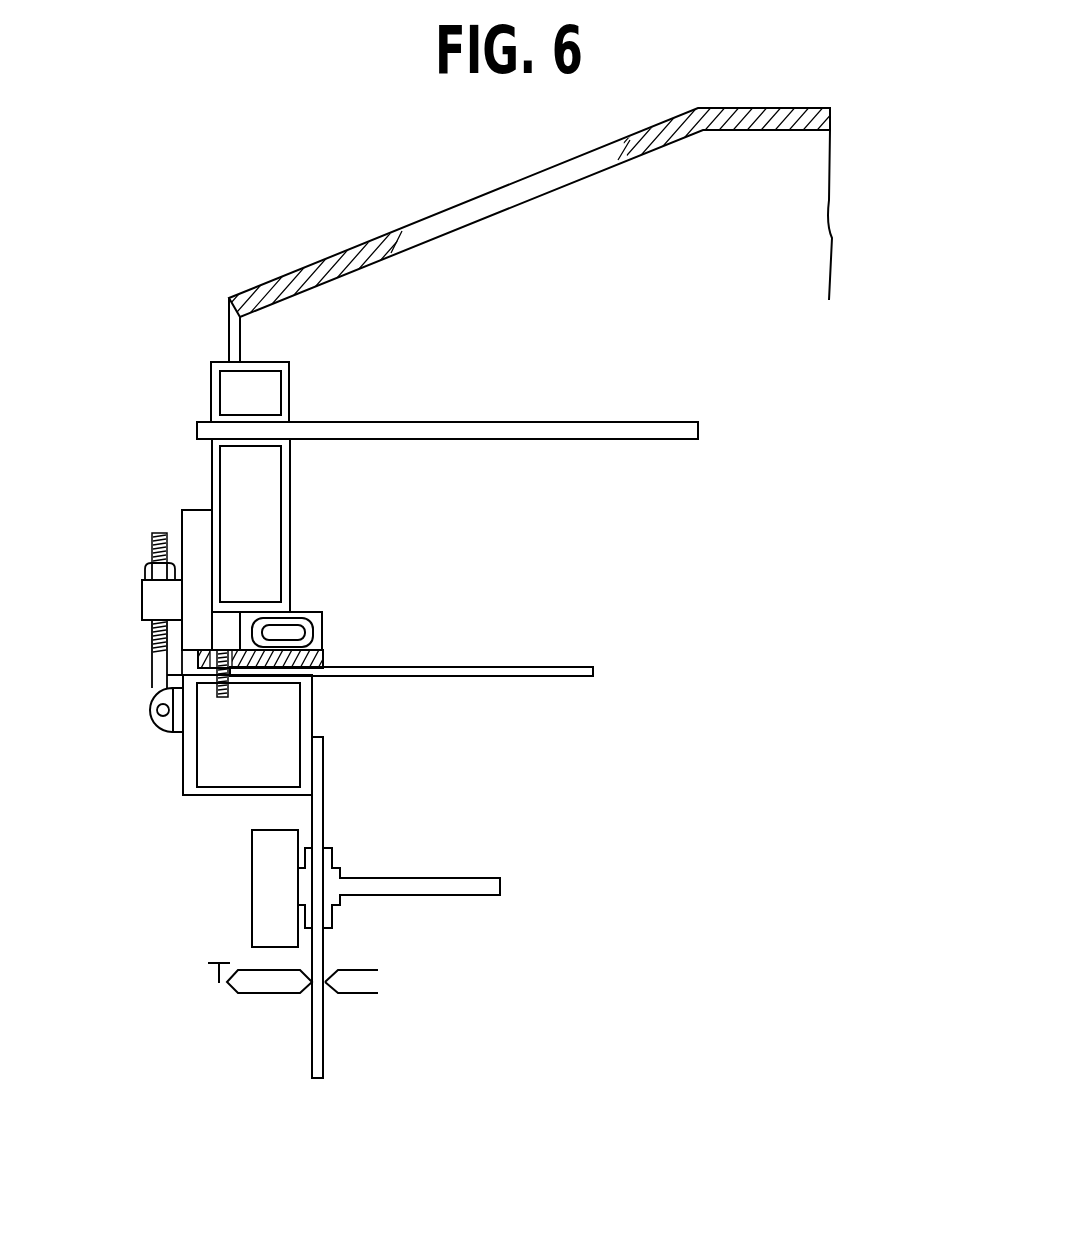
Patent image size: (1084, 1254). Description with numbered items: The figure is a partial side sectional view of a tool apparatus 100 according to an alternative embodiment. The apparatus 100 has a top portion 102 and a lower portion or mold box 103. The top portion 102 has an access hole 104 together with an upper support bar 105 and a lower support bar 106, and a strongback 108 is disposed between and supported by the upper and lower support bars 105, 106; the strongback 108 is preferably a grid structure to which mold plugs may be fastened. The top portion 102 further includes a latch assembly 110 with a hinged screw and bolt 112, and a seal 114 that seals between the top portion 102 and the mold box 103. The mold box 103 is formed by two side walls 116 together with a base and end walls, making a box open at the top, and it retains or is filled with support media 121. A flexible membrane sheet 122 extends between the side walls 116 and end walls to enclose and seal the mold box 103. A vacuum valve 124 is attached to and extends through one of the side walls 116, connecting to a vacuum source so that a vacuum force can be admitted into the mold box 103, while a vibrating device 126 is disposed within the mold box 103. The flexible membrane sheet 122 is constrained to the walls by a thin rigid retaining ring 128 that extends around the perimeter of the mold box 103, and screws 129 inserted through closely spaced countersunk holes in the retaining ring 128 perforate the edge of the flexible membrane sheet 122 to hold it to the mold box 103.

The tool apparatus 100 is at (874, 135).
The top portion 102 is at (245, 292).
The mold box 103 is at (264, 1063).
The access hole 104 is at (522, 177).
The upper support bar 105 is at (285, 362).
The lower support bar 106 is at (291, 473).
The strongback 108 is at (639, 421).
The latch assembly 110 is at (131, 552).
The hinged screw and bolt 112 is at (150, 655).
The seal 114 is at (316, 612).
The side wall 116 is at (312, 1031).
The support media 121 is at (537, 974).
The flexible membrane sheet 122 is at (551, 667).
The vacuum valve 124 is at (250, 970).
The vibrating device 126 is at (262, 862).
The retaining ring 128 is at (325, 652).
The screw 129 is at (222, 697).